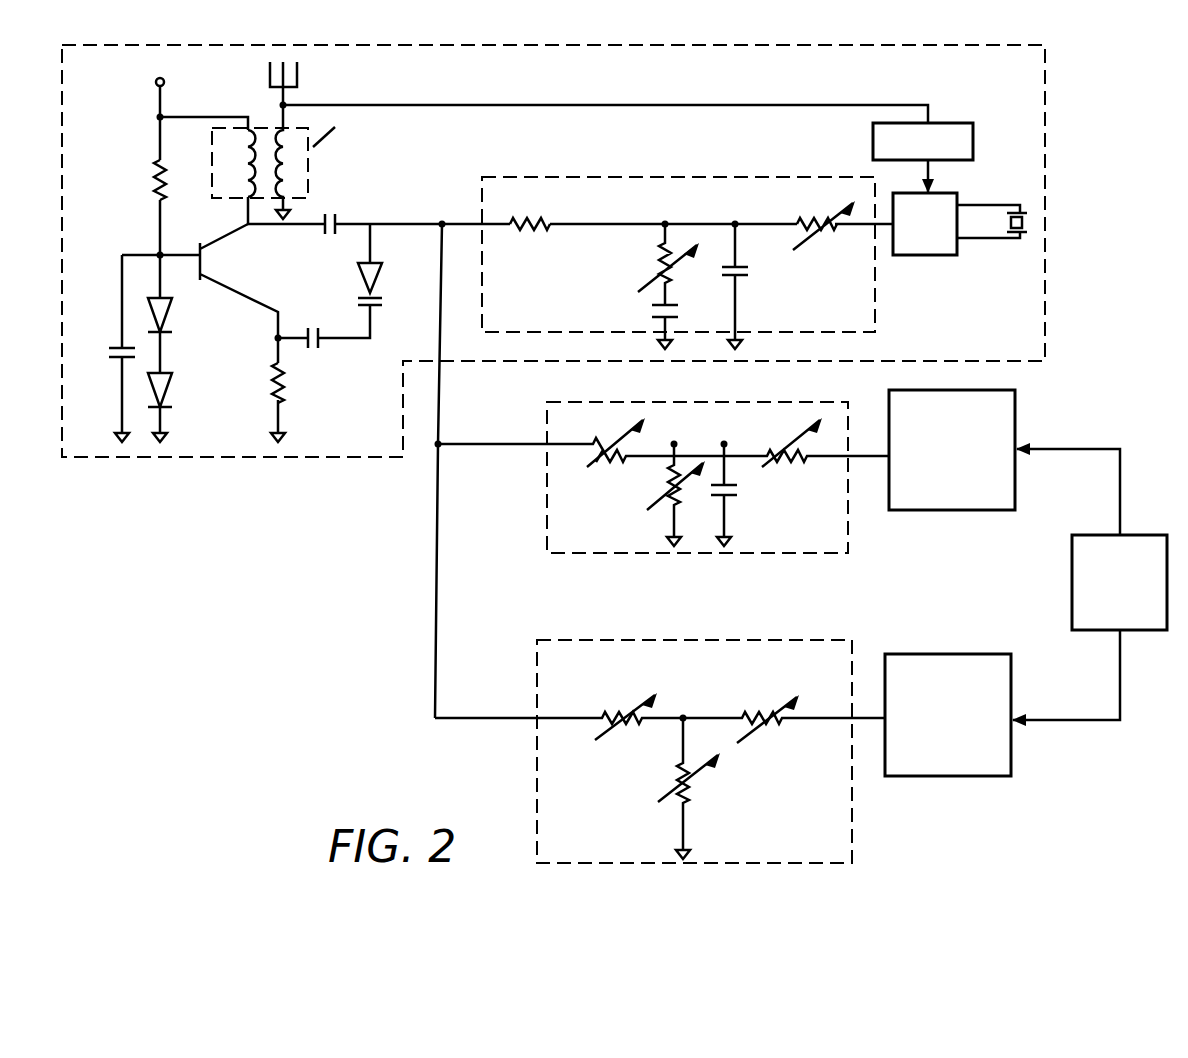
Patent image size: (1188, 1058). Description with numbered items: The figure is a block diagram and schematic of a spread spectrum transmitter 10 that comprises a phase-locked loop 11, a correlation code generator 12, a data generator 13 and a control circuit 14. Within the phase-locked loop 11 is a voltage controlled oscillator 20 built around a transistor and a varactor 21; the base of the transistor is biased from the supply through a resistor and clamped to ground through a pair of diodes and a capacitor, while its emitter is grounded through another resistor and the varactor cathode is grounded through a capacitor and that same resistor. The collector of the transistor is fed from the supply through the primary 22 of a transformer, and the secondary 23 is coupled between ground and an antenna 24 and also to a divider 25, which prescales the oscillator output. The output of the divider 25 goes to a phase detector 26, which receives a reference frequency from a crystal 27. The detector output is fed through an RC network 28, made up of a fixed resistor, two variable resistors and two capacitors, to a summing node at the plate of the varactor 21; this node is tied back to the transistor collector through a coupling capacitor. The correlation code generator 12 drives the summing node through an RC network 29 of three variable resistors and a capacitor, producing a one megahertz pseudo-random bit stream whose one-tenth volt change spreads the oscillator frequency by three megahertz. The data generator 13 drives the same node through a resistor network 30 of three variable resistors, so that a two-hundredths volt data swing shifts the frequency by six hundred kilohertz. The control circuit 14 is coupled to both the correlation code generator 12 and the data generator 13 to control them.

The spread spectrum transmitter 10 is at (318, 575).
The phase-locked loop 11 is at (1047, 163).
The correlation code generator 12 is at (960, 512).
The data generator 13 is at (970, 778).
The control circuit 14 is at (1072, 590).
The voltage controlled oscillator 20 is at (362, 178).
The varactor 21 is at (383, 284).
The primary 22 is at (241, 172).
The secondary 23 is at (287, 168).
The antenna 24 is at (267, 80).
The divider 25 is at (872, 132).
The phase detector 26 is at (915, 257).
The crystal 27 is at (1022, 203).
The RC network 28 is at (590, 177).
The RC network 29 is at (780, 553).
The resistor network 30 is at (702, 863).